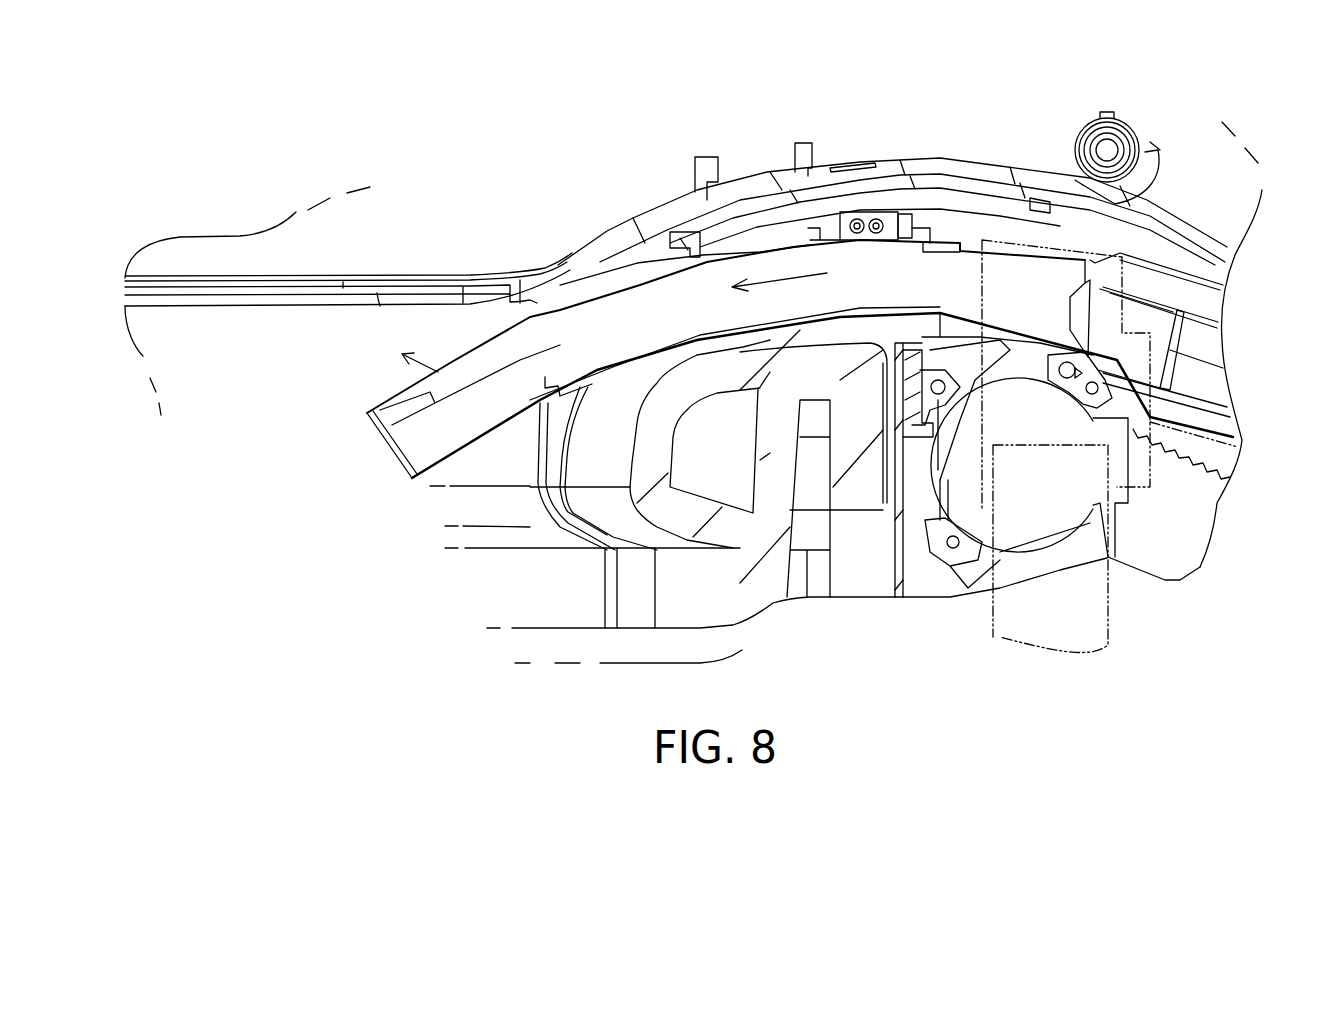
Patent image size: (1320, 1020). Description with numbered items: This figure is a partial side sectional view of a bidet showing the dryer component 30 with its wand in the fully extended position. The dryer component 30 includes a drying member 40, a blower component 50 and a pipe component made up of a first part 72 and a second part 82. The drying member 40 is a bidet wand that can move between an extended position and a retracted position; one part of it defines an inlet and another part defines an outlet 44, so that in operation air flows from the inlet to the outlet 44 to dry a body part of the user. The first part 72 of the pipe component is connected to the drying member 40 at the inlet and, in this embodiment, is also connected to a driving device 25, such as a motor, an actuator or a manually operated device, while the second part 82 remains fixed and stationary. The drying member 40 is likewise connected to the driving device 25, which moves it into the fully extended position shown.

The driving device 25 is at (975, 518).
The dryer component 30 is at (970, 230).
The drying member 40 is at (595, 300).
The outlet 44 is at (408, 386).
The blower component 50 is at (1116, 617).
The first part 72 is at (1072, 273).
The second part 82 is at (1238, 447).